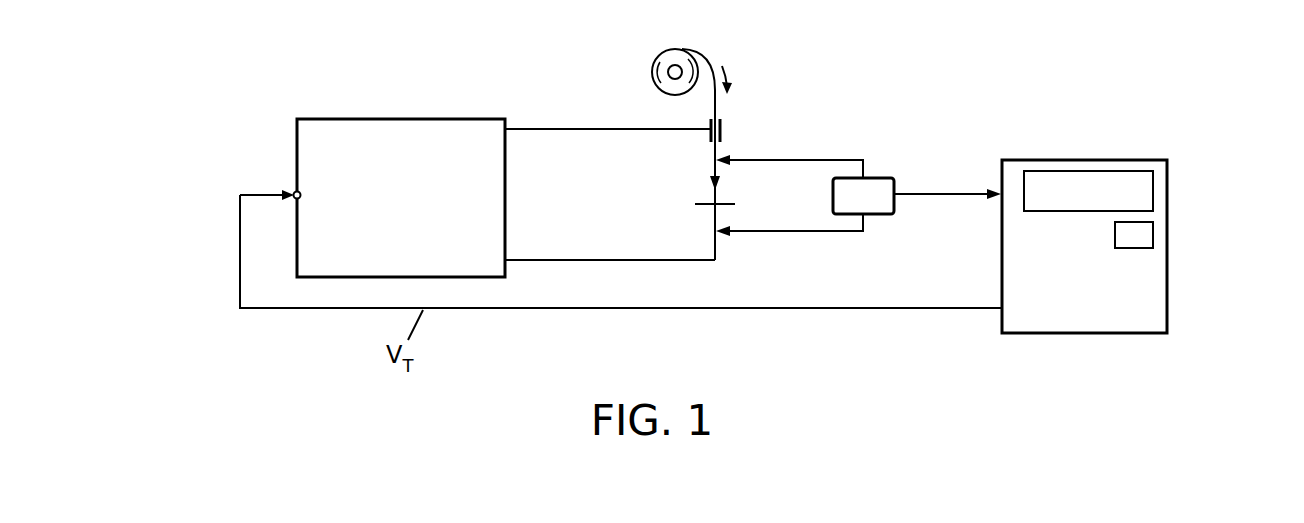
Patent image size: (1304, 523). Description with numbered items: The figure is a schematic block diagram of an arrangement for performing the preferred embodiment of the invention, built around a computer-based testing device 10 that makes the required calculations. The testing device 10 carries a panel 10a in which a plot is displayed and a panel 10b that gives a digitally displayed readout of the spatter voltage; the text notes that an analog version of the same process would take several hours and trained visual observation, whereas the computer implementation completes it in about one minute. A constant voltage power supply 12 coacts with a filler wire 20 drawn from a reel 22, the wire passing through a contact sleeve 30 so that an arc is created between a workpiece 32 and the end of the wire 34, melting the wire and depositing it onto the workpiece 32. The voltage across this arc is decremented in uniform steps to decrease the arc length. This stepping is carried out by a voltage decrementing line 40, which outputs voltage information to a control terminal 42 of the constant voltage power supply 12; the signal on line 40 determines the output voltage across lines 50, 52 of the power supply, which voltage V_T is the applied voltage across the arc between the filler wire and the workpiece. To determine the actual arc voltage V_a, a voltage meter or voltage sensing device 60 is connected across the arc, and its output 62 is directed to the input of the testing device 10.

The testing device 10 is at (1106, 292).
The panel 10a is at (1143, 187).
The panel 10b is at (1145, 232).
The constant voltage power supply 12 is at (365, 125).
The filler wire 20 is at (712, 62).
The reel 22 is at (652, 67).
The contact sleeve 30 is at (710, 137).
The workpiece 32 is at (705, 207).
The end of the wire 34 is at (720, 192).
The voltage decrementing line 40 is at (783, 308).
The control terminal 42 is at (293, 200).
The output line 50 is at (545, 128).
The output line 52 is at (557, 263).
The voltage sensing device 60 is at (887, 212).
The output 62 is at (938, 192).